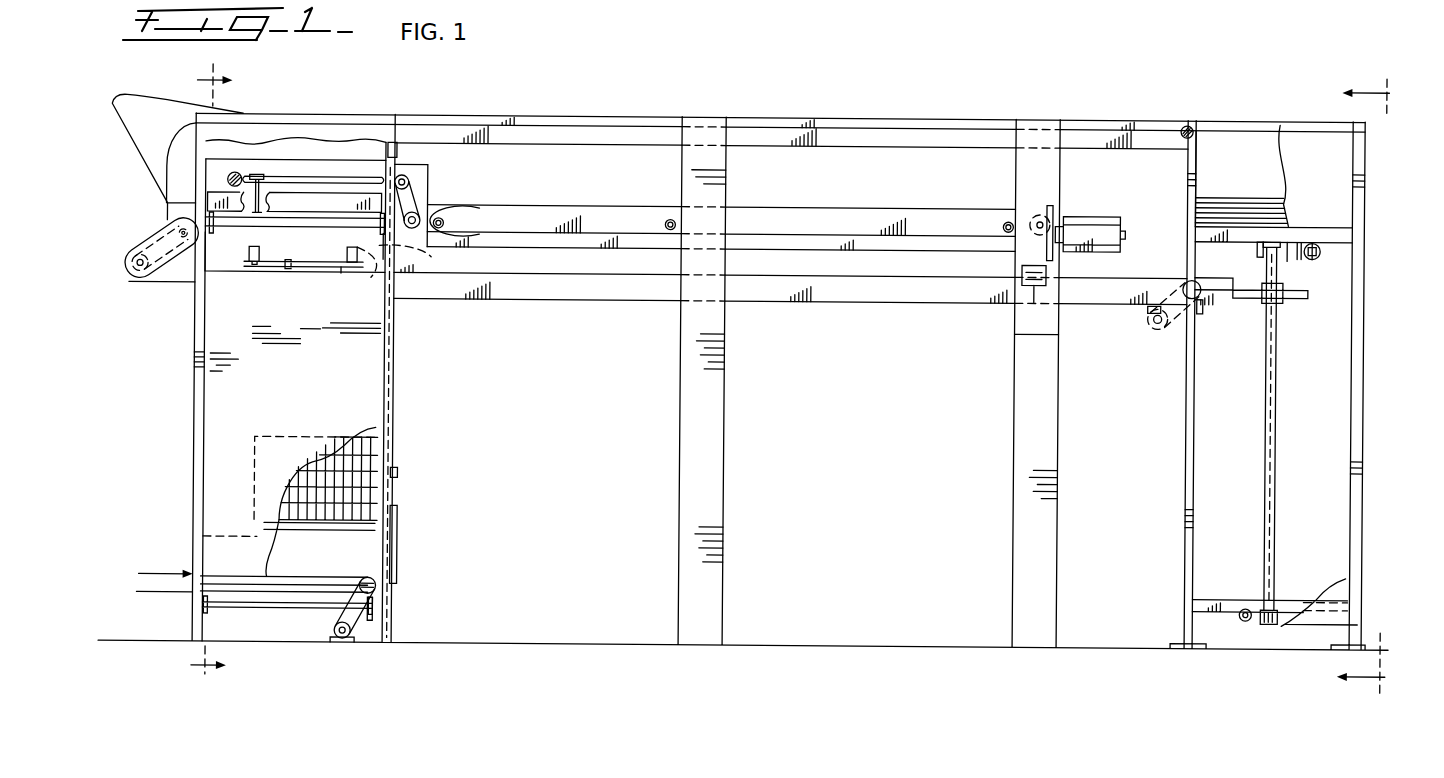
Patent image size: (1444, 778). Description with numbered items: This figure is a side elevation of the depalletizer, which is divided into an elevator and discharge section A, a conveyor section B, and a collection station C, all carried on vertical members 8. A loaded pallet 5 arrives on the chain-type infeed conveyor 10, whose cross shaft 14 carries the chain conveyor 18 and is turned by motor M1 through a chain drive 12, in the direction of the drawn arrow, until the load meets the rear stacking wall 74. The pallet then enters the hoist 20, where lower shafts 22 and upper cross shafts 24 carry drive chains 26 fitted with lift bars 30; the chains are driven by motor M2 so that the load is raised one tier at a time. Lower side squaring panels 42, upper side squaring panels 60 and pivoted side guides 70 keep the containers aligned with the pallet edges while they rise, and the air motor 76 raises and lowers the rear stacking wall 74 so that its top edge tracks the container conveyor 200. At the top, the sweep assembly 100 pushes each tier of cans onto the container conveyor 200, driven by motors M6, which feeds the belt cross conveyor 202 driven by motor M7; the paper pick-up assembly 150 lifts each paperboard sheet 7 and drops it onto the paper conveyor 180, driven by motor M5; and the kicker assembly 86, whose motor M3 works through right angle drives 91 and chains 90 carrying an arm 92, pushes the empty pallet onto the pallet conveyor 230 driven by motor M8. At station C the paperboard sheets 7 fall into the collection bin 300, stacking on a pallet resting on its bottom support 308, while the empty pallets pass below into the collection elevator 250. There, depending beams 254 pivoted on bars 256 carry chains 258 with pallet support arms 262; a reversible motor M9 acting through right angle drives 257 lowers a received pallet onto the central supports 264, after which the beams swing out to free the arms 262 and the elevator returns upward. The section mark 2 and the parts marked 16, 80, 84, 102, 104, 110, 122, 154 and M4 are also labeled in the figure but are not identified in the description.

The section line 2- 2 is at (208, 364).
The pallet 5 is at (372, 470).
The paper sheet 7 is at (1288, 209).
The vertical members 8 is at (196, 357).
The infeed conveyor 10 is at (161, 567).
The chain drive 12 is at (384, 622).
The cross shaft 14 is at (386, 599).
The conveyor roller 16 is at (378, 587).
The chain conveyor 18 is at (305, 578).
The hoist 20 is at (171, 450).
The lower shafts 22 is at (251, 608).
The upper cross shafts 24 is at (290, 229).
The drive chains 26 is at (207, 443).
The lift bars 30 is at (305, 536).
The lower side squaring panels 42 is at (291, 385).
The upper side squaring panels 60 is at (238, 260).
The side guides 70 is at (294, 204).
The rear stacking wall 74 is at (395, 416).
The air motor 76 is at (400, 536).
The block 80 is at (352, 248).
The arm 84 is at (368, 278).
The kicker assembly 86 is at (263, 295).
The chains 90 is at (337, 273).
The right angle drives 91 is at (340, 271).
The arm 92 is at (273, 271).
The sweep assembly 100 is at (436, 178).
The pulley drive 102 is at (418, 200).
The guide rail 104 is at (454, 239).
The shaft 110 is at (301, 183).
The bracket 122 is at (272, 208).
The paper pick-up assembly 150 is at (152, 184).
The hopper 154 is at (161, 134).
The paper conveyor 180 is at (634, 113).
The container conveyor 200 is at (617, 206).
The cross conveyor 202 is at (1110, 214).
The pallet conveyor 230 is at (632, 290).
The collection elevator 250 is at (1322, 389).
The depending beams 254 is at (1280, 352).
The bar 256 is at (1262, 251).
The right angle drives 257 is at (1314, 258).
The chain 258 is at (1277, 421).
The pallet support arms 262 is at (1290, 298).
The supports 264 is at (1240, 598).
The collection bin 300 is at (1245, 135).
The bottom support 308 is at (1345, 231).
The motor M1 is at (347, 642).
The motor M2 is at (150, 288).
The motor M3 is at (437, 260).
The motor M4 is at (444, 214).
The motor M5 is at (1190, 123).
The motors M6 is at (1040, 212).
The motor M7 is at (1035, 301).
The motor M8 is at (1162, 329).
The motor M9 is at (1318, 250).
The elevator and discharge section A is at (486, 344).
The conveyor section B is at (826, 316).
The collection station C is at (1132, 346).